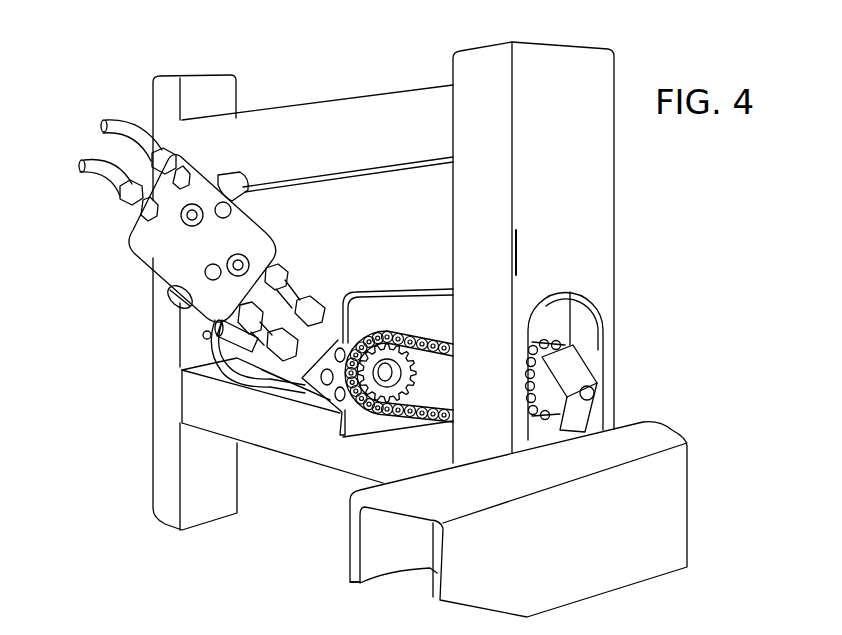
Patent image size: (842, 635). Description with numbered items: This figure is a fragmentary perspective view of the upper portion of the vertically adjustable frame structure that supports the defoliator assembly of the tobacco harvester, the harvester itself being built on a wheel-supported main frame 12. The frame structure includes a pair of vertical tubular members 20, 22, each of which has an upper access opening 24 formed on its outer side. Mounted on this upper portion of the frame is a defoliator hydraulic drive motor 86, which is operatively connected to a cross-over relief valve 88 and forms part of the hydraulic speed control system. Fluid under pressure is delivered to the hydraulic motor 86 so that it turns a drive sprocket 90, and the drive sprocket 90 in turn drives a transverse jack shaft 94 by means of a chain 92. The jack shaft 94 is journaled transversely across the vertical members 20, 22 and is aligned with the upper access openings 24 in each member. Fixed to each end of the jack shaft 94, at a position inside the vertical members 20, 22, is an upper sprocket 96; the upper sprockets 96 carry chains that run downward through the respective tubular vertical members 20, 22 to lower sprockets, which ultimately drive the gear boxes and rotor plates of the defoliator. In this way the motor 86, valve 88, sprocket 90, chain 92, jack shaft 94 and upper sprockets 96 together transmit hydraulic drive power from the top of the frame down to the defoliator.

The main frame 12 is at (663, 555).
The vertical tubular member 20 is at (607, 202).
The vertical tubular member 22 is at (153, 302).
The upper access opening 24 is at (603, 312).
The defoliator hydraulic drive motor 86 is at (280, 388).
The cross-over relief valve 88 is at (155, 240).
The drive sprocket 90 is at (380, 397).
The chain 92 is at (377, 330).
The jack shaft 94 is at (207, 347).
The upper sprocket 96 is at (550, 370).